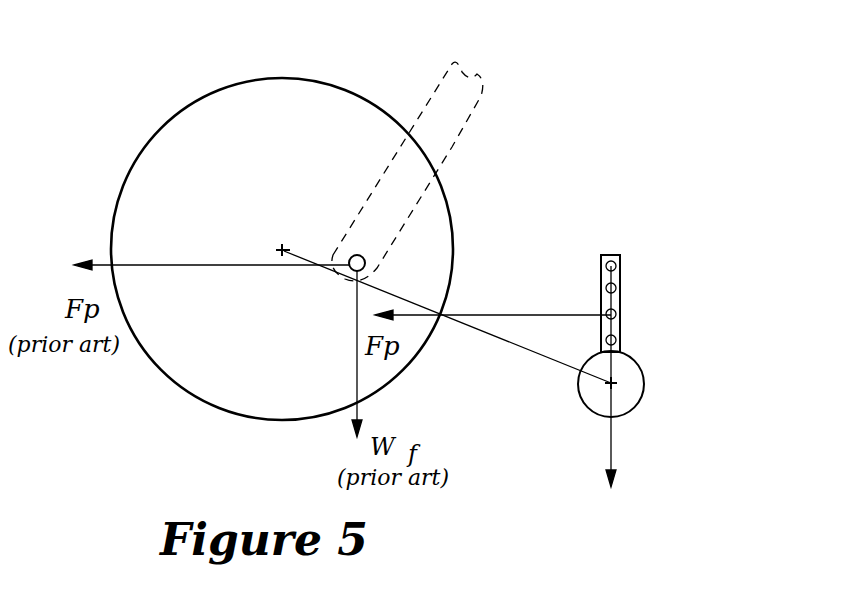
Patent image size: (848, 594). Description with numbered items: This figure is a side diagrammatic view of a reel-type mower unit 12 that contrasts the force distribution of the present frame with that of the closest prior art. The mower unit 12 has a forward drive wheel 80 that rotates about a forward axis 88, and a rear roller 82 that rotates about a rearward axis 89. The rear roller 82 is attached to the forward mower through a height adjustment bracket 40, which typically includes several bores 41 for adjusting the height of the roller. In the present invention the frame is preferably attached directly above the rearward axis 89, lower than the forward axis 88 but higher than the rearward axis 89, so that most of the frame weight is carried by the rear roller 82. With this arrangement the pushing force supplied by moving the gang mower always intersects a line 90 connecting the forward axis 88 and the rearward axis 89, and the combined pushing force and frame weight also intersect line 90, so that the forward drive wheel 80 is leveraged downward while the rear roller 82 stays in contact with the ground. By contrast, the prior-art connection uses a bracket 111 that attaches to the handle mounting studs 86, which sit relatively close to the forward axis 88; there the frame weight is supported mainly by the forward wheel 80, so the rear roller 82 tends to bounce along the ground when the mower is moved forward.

The reel-type mower unit 12 is at (560, 156).
The height adjustment bracket 40 is at (620, 273).
The adjustment holes 41 is at (602, 283).
The forward drive wheel 80 is at (150, 135).
The rear roller 82 is at (644, 374).
The handle mounting stud 86 is at (364, 255).
The forward axis 88 is at (282, 248).
The rearward axis 89 is at (580, 392).
The line connecting axis 88 and axis 89 90 is at (510, 343).
The bracket 111 is at (461, 136).